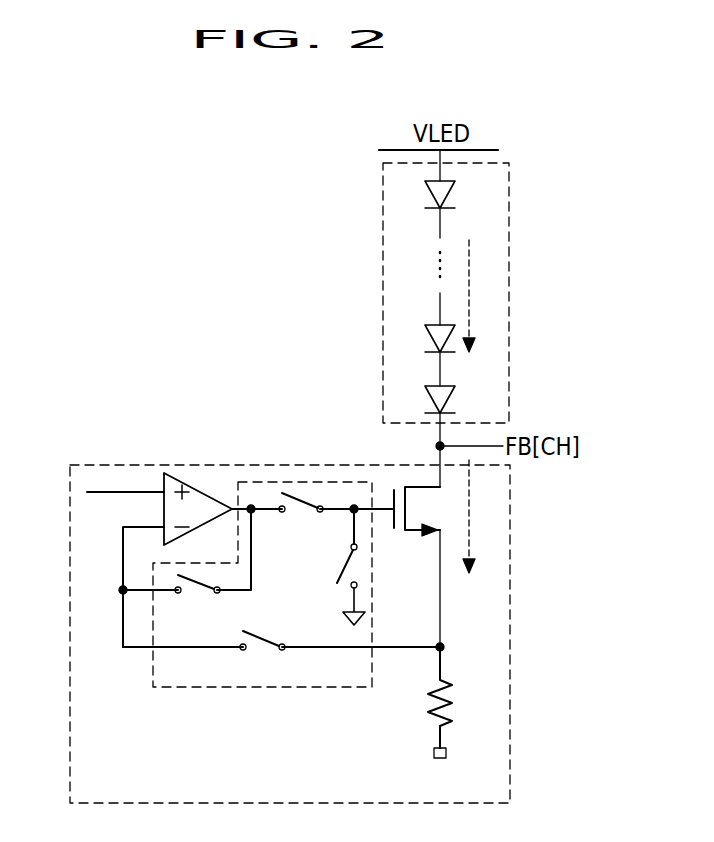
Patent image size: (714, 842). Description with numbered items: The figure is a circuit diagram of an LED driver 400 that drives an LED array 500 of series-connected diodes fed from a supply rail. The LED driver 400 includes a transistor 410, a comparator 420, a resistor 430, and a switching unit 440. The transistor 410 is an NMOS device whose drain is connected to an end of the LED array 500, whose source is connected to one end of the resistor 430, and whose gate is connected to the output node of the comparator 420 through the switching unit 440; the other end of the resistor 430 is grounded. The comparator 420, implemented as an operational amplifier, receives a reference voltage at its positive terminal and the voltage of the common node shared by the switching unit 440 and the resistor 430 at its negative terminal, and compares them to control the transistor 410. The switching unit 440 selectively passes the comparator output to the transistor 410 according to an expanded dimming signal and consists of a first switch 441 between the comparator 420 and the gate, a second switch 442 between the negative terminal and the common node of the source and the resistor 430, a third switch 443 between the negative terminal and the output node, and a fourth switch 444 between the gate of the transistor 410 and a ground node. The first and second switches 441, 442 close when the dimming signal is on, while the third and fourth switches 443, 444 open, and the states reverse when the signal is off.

The LED driver 400 is at (92, 463).
The transistor 410 is at (392, 500).
The comparator 420 is at (195, 483).
The resistor 430 is at (428, 700).
The switching unit 440 is at (153, 675).
The first switch 441 is at (300, 492).
The second switch 442 is at (270, 640).
The third switch 443 is at (200, 572).
The fourth switch 444 is at (340, 565).
The LED array 500 is at (382, 268).